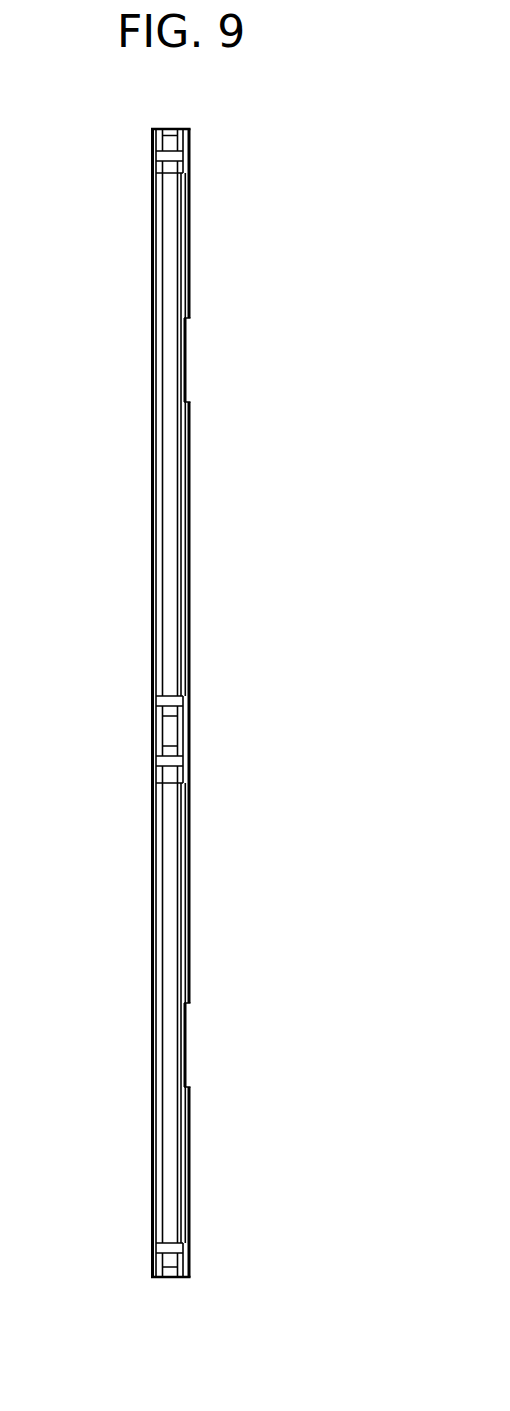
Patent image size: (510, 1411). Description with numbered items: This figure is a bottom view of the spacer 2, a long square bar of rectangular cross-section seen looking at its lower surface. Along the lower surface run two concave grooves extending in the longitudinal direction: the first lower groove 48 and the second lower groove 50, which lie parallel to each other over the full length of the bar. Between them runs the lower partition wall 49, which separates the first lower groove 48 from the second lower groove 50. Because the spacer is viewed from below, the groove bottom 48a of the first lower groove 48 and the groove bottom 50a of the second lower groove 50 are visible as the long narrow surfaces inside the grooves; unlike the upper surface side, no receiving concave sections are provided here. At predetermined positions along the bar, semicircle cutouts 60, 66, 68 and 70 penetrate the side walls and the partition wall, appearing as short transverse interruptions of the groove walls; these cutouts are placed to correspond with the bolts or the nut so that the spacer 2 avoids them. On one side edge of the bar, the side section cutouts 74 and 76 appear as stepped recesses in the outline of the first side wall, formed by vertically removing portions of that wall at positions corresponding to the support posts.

The spacer 2 is at (214, 122).
The first lower groove 48 is at (160, 873).
The groove bottom of the first lower groove 48a is at (160, 576).
The lower partition wall 49 is at (170, 242).
The second lower groove 50 is at (178, 898).
The groove bottom of the second lower groove 50a is at (180, 575).
The semicircle cutout 60 is at (190, 153).
The semicircle cutout 66 is at (190, 700).
The semicircle cutout 68 is at (190, 772).
The semicircle cutout 70 is at (190, 1254).
The side section cutout 74 is at (186, 321).
The side section cutout 76 is at (186, 1006).